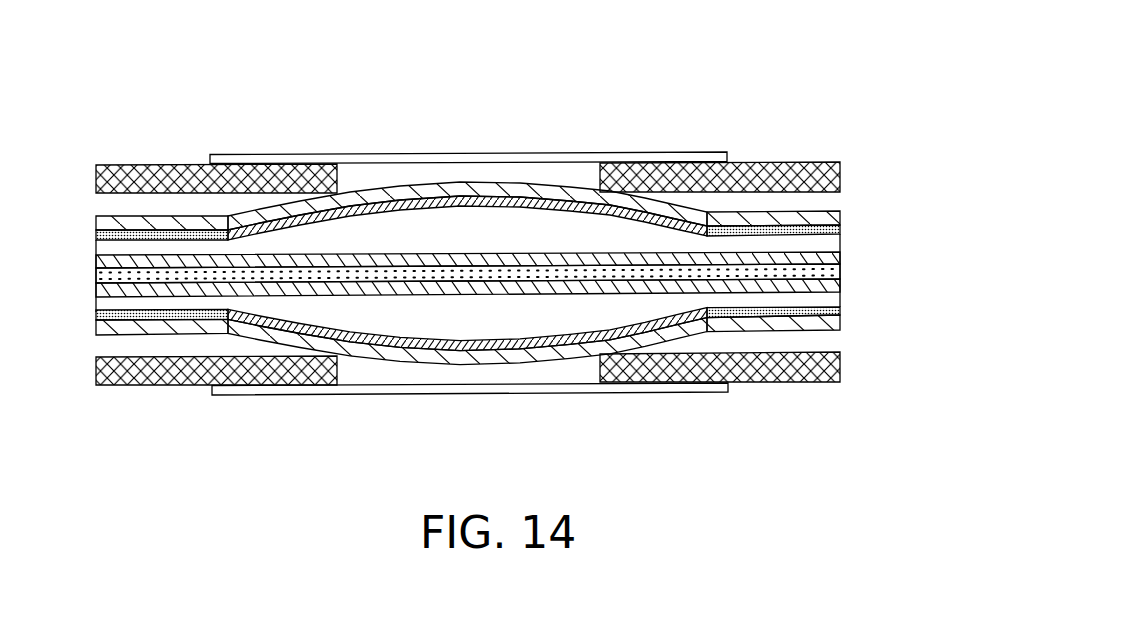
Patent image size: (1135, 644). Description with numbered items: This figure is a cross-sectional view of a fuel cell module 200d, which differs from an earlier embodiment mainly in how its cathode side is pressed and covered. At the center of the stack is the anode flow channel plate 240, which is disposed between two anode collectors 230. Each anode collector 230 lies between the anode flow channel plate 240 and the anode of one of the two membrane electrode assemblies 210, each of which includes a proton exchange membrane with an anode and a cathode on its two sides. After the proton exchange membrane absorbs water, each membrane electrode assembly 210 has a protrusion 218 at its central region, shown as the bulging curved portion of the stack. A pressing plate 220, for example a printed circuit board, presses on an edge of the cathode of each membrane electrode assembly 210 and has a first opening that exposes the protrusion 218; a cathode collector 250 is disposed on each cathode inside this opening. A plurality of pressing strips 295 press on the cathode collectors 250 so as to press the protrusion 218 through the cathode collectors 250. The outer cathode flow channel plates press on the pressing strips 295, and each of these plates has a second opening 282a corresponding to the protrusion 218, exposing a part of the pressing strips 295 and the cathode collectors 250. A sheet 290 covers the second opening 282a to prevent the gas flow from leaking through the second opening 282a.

The fuel cell module 200d is at (835, 502).
The membrane electrode assembly 210 is at (840, 228).
The protrusion 218 is at (458, 204).
The pressing plate 220 is at (509, 276).
The anode collector 230 is at (822, 246).
The anode flow channel plate 240 is at (813, 270).
The cathode collector 250 is at (386, 190).
The second opening 282a is at (596, 172).
The sheet 290 is at (637, 160).
The pressing strip 295 is at (840, 211).